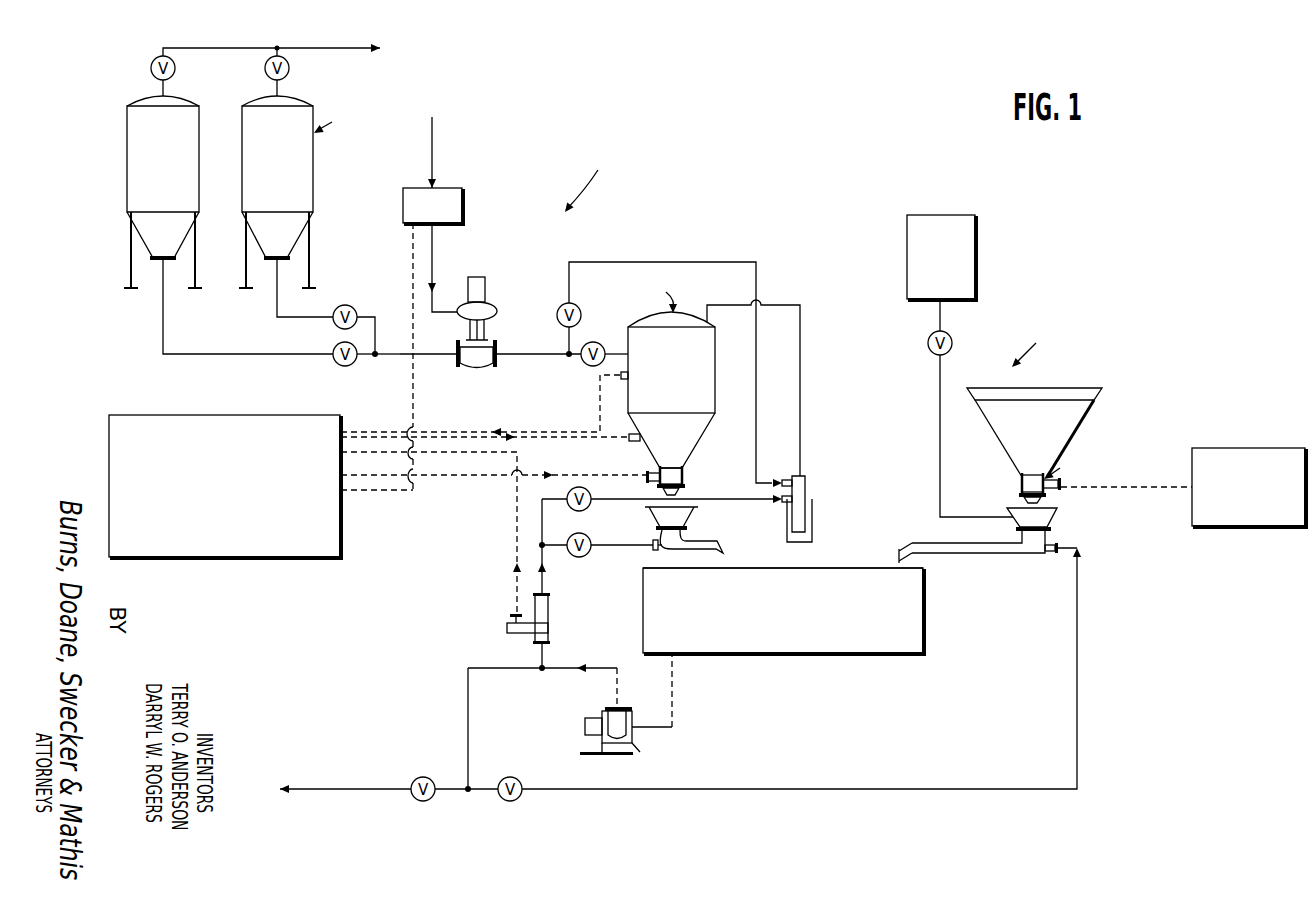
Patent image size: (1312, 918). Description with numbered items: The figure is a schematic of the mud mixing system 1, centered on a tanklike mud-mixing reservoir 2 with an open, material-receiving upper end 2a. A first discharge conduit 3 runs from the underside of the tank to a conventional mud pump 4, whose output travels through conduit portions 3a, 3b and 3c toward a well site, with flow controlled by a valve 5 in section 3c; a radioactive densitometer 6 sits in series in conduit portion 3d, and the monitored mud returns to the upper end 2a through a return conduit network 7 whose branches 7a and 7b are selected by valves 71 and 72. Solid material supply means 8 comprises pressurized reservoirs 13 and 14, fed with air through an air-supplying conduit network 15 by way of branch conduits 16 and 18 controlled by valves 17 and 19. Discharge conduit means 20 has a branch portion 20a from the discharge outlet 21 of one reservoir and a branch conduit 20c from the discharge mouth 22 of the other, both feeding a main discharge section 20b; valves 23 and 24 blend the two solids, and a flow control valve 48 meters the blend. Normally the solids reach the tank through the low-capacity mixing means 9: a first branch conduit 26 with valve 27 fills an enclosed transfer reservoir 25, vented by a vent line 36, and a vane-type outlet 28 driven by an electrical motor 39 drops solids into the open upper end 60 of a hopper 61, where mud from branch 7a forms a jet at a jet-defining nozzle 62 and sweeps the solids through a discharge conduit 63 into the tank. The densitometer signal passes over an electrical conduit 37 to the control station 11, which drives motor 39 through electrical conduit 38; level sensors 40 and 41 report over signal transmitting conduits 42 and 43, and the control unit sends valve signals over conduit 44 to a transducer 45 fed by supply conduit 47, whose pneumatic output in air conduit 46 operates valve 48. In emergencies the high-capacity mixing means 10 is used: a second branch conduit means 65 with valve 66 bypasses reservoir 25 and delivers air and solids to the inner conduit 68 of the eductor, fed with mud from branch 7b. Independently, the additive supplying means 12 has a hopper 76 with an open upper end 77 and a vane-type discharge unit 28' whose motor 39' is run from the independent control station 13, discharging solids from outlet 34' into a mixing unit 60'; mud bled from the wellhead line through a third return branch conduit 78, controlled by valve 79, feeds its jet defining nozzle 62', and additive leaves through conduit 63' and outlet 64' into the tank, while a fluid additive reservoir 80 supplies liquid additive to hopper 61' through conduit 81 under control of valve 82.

The mud mixing system 1 is at (587, 179).
The mud-mixing reservoir 2 is at (900, 621).
The upper end of mud tank 2a is at (851, 566).
The first discharge conduit 3 is at (672, 694).
The conduit portion 3a is at (581, 667).
The conduit portion 3b is at (468, 710).
The conduit section 3c is at (390, 775).
The conduit portion 3d is at (542, 588).
The mud pump 4 is at (632, 745).
The valve 5 is at (426, 777).
The radioactive densitometer 6 is at (548, 618).
The return conduit network 7 is at (542, 519).
The first return branch conduit portion 7a is at (625, 544).
The second return branch conduit 7b is at (625, 498).
The solid material supply means 8 is at (329, 120).
The low-capacity mixing means 9 is at (671, 372).
The high-capacity mixing means 10 is at (806, 478).
The control station 11 is at (245, 411).
The additive supplying means 12 is at (1079, 432).
The reservoir 13 is at (243, 167).
The reservoir 14 is at (128, 167).
The air-supplying conduit network 15 is at (306, 48).
The branch conduit 16 is at (276, 92).
The valve 17 is at (266, 66).
The branch conduit 18 is at (162, 90).
The valve 19 is at (153, 65).
The discharge conduit means 20 is at (379, 360).
The branch portion 20a is at (277, 312).
The main discharge section 20b is at (404, 351).
The branch conduit 20c is at (163, 332).
The discharge outlet 21 is at (265, 261).
The discharge mouth 22 is at (150, 261).
The manually operable valve 23 is at (349, 311).
The manually operable valve 24 is at (334, 348).
The transfer reservoir 25 is at (706, 361).
The first branch conduit 26 is at (579, 346).
The valve 27 is at (596, 380).
The vane-type outlet 28 is at (687, 472).
The vane-type discharge unit 28' is at (1060, 473).
The outlet 34' is at (1014, 498).
The vent line 36 is at (736, 305).
The electrical conduit 37 is at (513, 510).
The electrical conduit 38 is at (592, 474).
The electrical motor 39 is at (645, 467).
The motor 39' is at (1117, 493).
The sensor 40 is at (620, 381).
The sensor 41 is at (631, 442).
The signal transmitting conduit 42 is at (455, 430).
The signal transmitting conduit 43 is at (557, 439).
The signal-transmitting conduit 44 is at (413, 249).
The transducer 45 is at (462, 201).
The air conduit 46 is at (433, 254).
The supply conduit 47 is at (435, 160).
The flow control valve 48 is at (486, 301).
The open upper end of hopper 60 is at (688, 512).
The mixing unit 60' is at (1055, 519).
The hopper 61 is at (701, 522).
The hopper 61' is at (1061, 537).
The jet-defining nozzle 62 is at (641, 557).
The jet defining nozzle 62' is at (1044, 559).
The discharge conduit 63 is at (708, 541).
The conduit 63' is at (978, 553).
The outlet 64' is at (886, 550).
The second branch conduit means 65 is at (669, 262).
The valve 66 is at (557, 318).
The inner conduit 68 is at (812, 500).
The valve 71 is at (588, 556).
The valve 72 is at (590, 508).
The hopper 76 is at (1075, 423).
The open upper end 77 is at (1042, 388).
The third return branch conduit 78 is at (792, 789).
The valve 79 is at (518, 779).
The fluid additive reservoir 80 is at (976, 251).
The conduit 81 is at (941, 377).
The control valve 82 is at (952, 338).